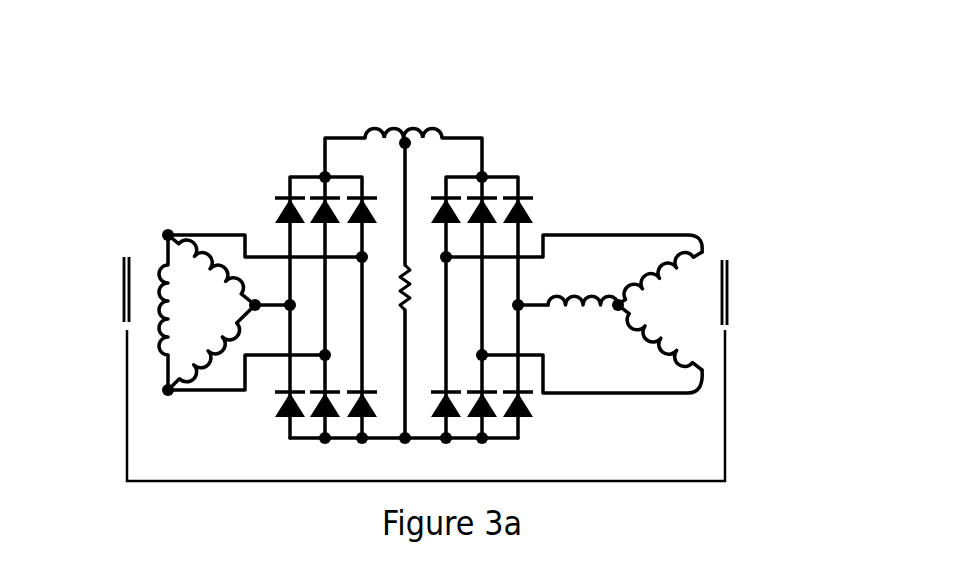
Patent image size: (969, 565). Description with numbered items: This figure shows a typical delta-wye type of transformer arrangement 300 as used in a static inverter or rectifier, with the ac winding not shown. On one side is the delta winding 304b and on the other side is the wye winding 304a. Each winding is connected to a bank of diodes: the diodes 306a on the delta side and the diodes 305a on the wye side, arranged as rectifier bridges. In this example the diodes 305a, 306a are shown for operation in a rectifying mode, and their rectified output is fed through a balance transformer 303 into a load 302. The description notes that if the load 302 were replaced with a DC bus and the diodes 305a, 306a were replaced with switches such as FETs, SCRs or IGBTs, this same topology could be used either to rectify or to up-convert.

The generator system 300 is at (709, 52).
The load 302 is at (408, 262).
The balance transformer 303 is at (432, 124).
The wye 304a is at (731, 263).
The delta 304b is at (121, 267).
The diodes 305a is at (537, 437).
The diodes 306a is at (267, 438).